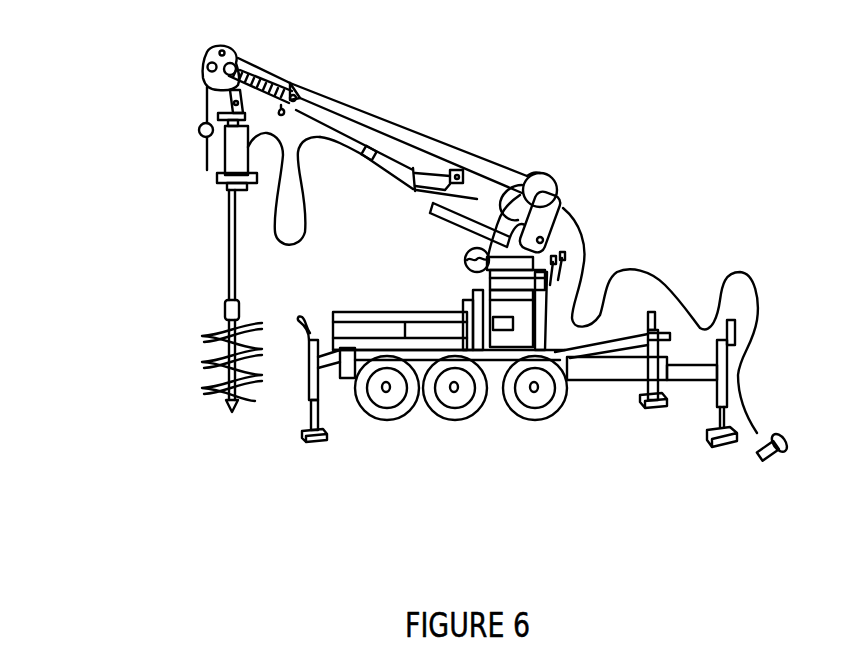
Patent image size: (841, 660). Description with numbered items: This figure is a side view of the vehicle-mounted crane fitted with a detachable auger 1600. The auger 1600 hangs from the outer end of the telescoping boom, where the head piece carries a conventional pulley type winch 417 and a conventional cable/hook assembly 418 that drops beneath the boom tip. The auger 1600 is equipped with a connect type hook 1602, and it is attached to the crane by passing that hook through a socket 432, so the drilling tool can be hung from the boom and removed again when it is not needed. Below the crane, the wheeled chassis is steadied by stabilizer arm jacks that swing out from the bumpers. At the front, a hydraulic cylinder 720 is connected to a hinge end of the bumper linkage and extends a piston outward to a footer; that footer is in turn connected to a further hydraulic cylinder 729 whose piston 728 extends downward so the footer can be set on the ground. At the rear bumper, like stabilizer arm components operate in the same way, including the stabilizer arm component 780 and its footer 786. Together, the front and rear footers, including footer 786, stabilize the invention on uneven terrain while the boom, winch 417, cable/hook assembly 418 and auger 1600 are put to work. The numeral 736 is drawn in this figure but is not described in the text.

The pulley type winch 417 is at (212, 47).
The socket 432 is at (230, 98).
The cable/hook assembly 418 is at (200, 126).
The connect type hook 1602 is at (235, 160).
The detachable auger 1600 is at (215, 358).
The hydraulic cylinder 729 is at (318, 371).
The piston 728 is at (318, 414).
The front outrigger foot pad 736 is at (313, 438).
The hydraulic cylinder 720 is at (347, 378).
The stabilizer arm component 780 is at (607, 376).
The footer 786 is at (725, 447).